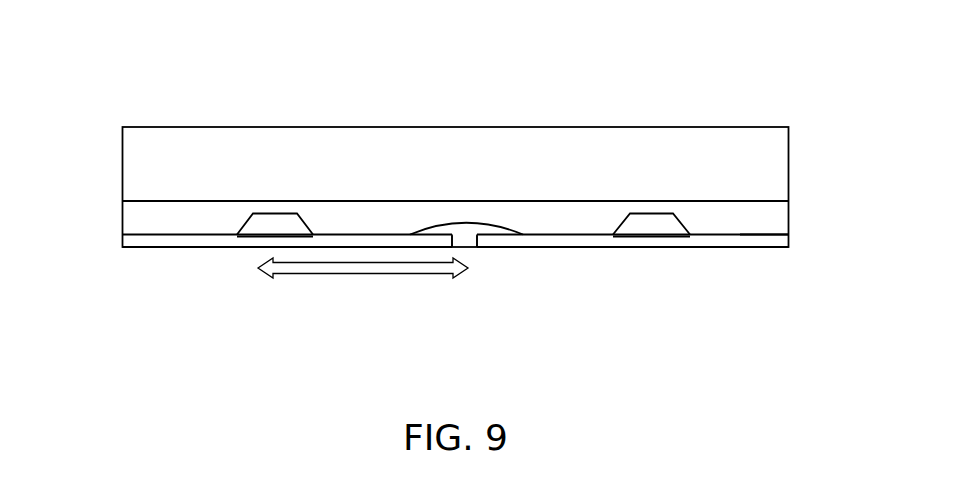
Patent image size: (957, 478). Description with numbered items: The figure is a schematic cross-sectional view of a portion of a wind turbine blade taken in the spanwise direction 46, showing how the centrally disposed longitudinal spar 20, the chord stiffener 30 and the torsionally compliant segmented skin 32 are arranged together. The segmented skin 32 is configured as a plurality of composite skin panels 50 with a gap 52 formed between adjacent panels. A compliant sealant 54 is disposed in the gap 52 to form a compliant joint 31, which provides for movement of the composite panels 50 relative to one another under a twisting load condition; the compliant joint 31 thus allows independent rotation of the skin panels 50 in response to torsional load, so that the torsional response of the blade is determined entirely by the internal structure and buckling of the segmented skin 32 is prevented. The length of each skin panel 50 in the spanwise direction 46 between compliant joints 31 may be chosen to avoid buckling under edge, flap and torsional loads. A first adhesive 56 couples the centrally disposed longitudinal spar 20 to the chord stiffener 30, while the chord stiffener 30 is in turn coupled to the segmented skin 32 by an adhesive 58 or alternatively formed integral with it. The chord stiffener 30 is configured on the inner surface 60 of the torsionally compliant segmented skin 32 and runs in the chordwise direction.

The centrally disposed longitudinal spar 20 is at (635, 127).
The chord stiffener 30 is at (665, 217).
The compliant joint 31 is at (488, 200).
The torsionally compliant segmented skin 32 is at (122, 240).
The spanwise direction 46 is at (308, 268).
The composite skin panel 50 is at (588, 247).
The gap 52 is at (448, 247).
The compliant sealant 54 is at (467, 228).
The first adhesive 56 is at (135, 213).
The adhesive 58 is at (250, 236).
The inner surface 60 is at (767, 233).